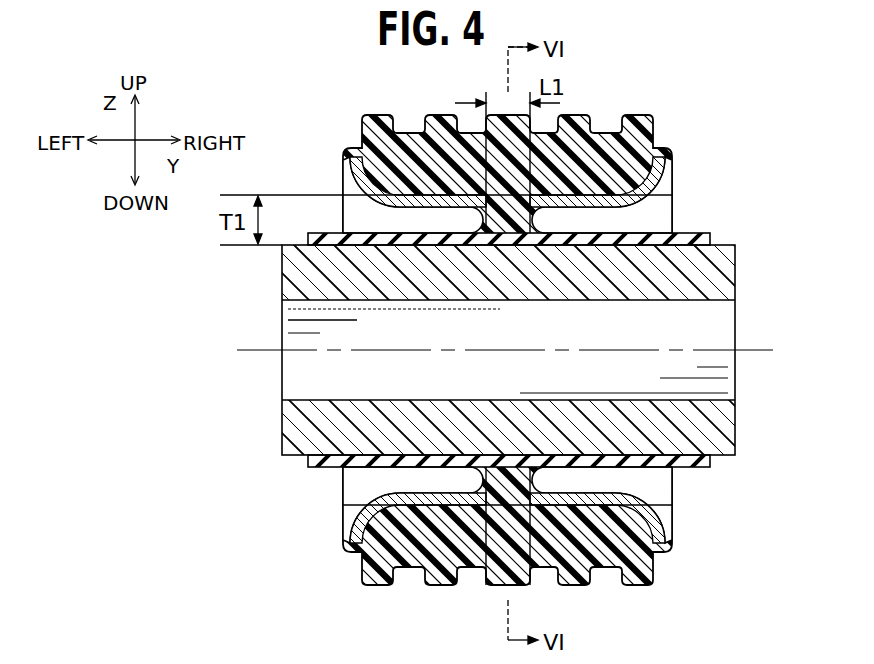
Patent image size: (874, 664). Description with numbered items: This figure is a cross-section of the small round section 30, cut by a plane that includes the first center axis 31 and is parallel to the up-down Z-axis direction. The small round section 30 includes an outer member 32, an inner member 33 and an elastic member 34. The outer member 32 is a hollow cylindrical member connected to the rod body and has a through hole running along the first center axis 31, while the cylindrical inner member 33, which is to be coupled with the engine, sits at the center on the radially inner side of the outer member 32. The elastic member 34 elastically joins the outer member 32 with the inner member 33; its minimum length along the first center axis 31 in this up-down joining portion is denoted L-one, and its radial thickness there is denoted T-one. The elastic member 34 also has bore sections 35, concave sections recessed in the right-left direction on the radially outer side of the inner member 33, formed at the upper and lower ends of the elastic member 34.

The small round section 30 is at (437, 350).
The first center axis 31 is at (250, 349).
The outer member 32 is at (637, 128).
The inner member 33 is at (465, 327).
The elastic member 34 is at (623, 200).
The bore sections 35 is at (372, 217).